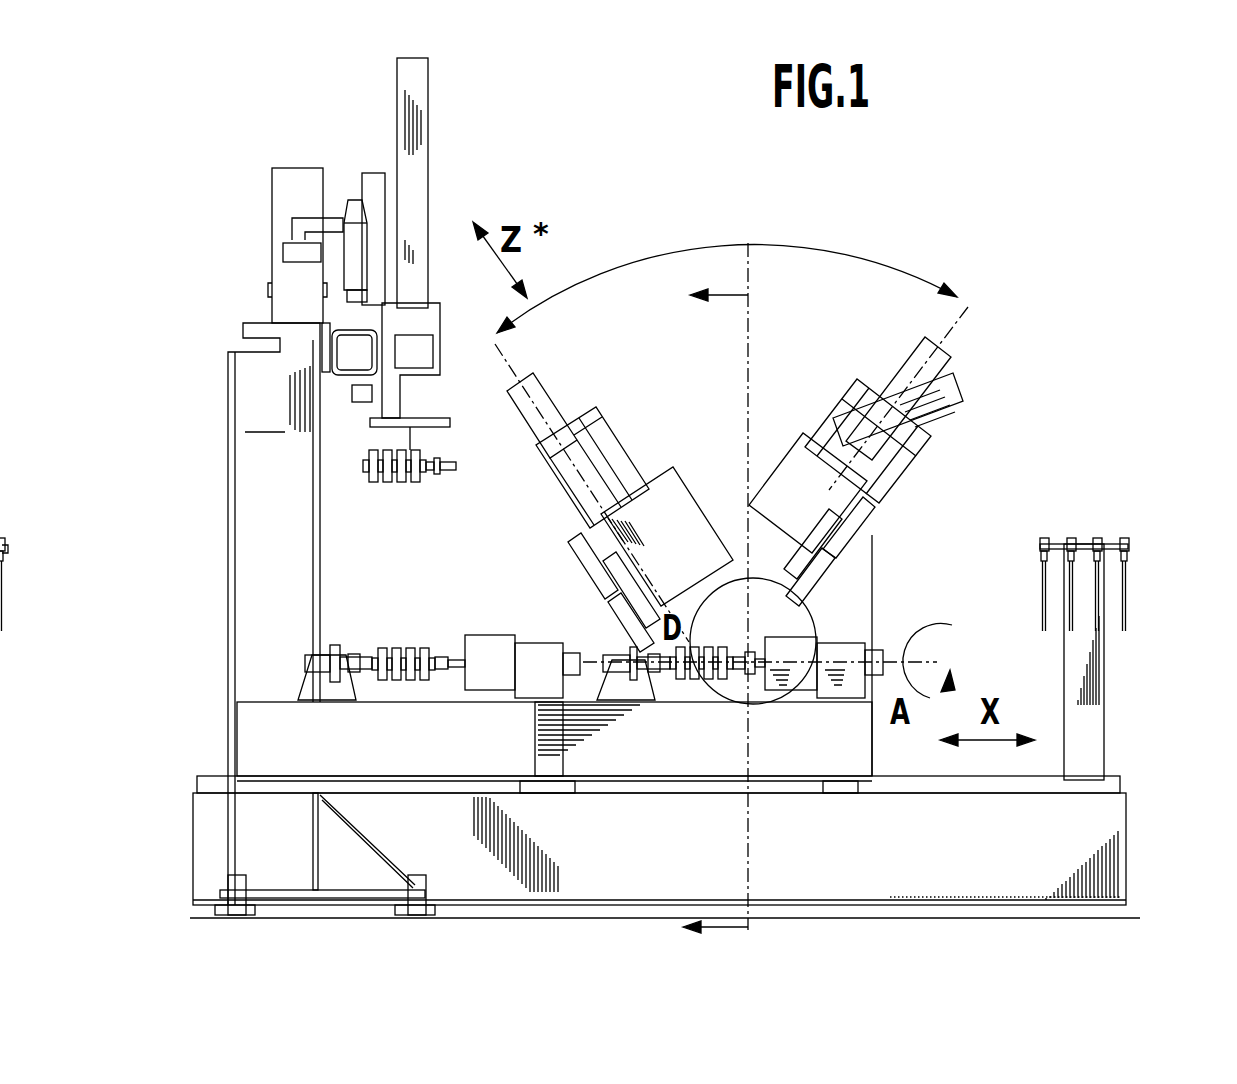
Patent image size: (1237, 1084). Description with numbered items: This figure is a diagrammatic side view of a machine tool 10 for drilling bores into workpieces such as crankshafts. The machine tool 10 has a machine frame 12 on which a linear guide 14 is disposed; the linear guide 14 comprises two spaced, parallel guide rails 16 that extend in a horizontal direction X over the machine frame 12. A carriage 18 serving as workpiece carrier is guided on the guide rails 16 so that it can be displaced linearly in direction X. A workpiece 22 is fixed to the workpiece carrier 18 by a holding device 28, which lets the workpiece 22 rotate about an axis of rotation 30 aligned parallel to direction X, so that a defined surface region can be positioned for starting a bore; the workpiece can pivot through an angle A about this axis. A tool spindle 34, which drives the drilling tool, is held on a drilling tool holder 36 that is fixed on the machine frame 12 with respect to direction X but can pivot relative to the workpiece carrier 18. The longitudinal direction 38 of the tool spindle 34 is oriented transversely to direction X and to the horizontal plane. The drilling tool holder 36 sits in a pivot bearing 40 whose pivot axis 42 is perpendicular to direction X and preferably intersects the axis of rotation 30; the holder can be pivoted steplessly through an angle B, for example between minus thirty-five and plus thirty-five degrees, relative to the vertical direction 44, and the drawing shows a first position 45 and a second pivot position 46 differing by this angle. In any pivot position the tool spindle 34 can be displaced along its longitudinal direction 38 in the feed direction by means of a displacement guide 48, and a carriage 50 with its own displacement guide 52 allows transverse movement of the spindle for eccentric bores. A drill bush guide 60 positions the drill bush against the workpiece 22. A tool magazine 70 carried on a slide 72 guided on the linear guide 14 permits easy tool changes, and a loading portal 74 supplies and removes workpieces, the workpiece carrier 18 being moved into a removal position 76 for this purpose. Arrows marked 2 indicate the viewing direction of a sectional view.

The section line 2 is at (730, 601).
The machine tool 10 is at (1029, 407).
The machine frame 12 is at (1089, 813).
The linear guide 14 is at (1041, 766).
The guide rails 16 is at (922, 777).
The carriage 18 is at (648, 767).
The workpiece 22 is at (887, 632).
The holding device 28 is at (902, 613).
The axis of rotation 30 is at (940, 660).
The tool spindle 34 is at (690, 557).
The drilling tool holder 36 is at (624, 518).
The longitudinal direction 38 is at (580, 412).
The pivot bearing 40 is at (772, 670).
The pivot axis 42 is at (740, 690).
The vertical direction 44 is at (752, 360).
The first position 45 is at (523, 472).
The second pivot position 46 is at (985, 350).
The displacement guide 48 is at (600, 568).
The carriage 50 is at (598, 511).
The displacement guide 52 is at (637, 613).
The drill bush guide 60 is at (720, 547).
The tool magazine 70 is at (1163, 563).
The slide 72 is at (1082, 665).
The loading portal 74 is at (327, 117).
The removal position 76 is at (360, 636).